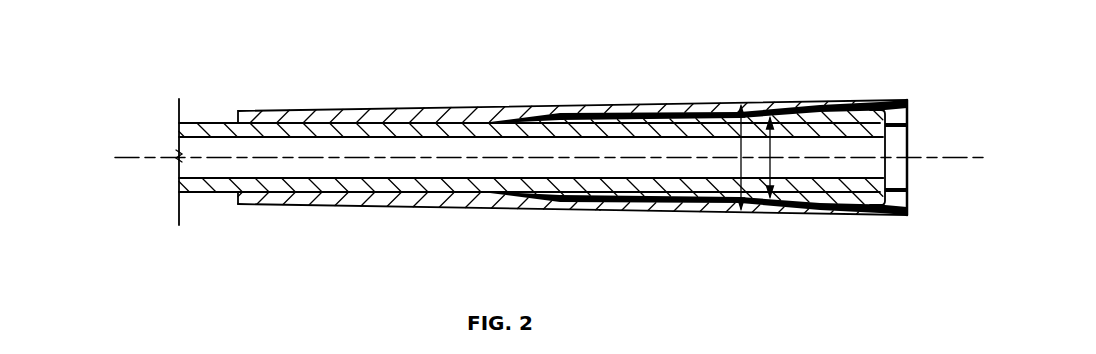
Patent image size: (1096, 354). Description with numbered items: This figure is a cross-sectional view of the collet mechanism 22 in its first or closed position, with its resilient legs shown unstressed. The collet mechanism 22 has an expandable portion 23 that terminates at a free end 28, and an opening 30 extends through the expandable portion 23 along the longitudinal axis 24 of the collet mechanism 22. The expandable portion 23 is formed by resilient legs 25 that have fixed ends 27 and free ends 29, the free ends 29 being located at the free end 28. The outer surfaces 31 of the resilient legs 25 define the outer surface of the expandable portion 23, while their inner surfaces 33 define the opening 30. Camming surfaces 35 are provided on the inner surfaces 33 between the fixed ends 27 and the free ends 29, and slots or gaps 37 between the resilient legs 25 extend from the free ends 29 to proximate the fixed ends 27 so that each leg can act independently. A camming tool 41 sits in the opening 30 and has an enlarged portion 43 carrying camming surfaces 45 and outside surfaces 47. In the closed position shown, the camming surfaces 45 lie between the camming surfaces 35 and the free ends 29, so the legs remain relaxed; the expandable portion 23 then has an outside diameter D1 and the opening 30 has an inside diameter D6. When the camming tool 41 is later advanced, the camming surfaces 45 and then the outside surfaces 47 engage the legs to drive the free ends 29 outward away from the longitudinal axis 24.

The collet mechanism 22 is at (540, 58).
The expandable portion 23 is at (681, 104).
The outer surfaces 31 is at (600, 108).
The fixed ends 27 is at (442, 207).
The enlarged portion 43 is at (807, 205).
The opening 30 is at (651, 170).
The inner surfaces 33 is at (683, 187).
The camming tool 41 is at (555, 171).
The camming surfaces 45 is at (833, 109).
The outside surfaces 47 is at (838, 213).
The free ends 29 is at (879, 102).
The free end 28 is at (909, 104).
The resilient legs 25 is at (888, 176).
The camming surfaces 35 is at (881, 214).
The slots or gaps 37 is at (909, 192).
The longitudinal axis 24 is at (119, 160).
The outside diameter D1 is at (743, 108).
The inside diameter D6 is at (772, 118).